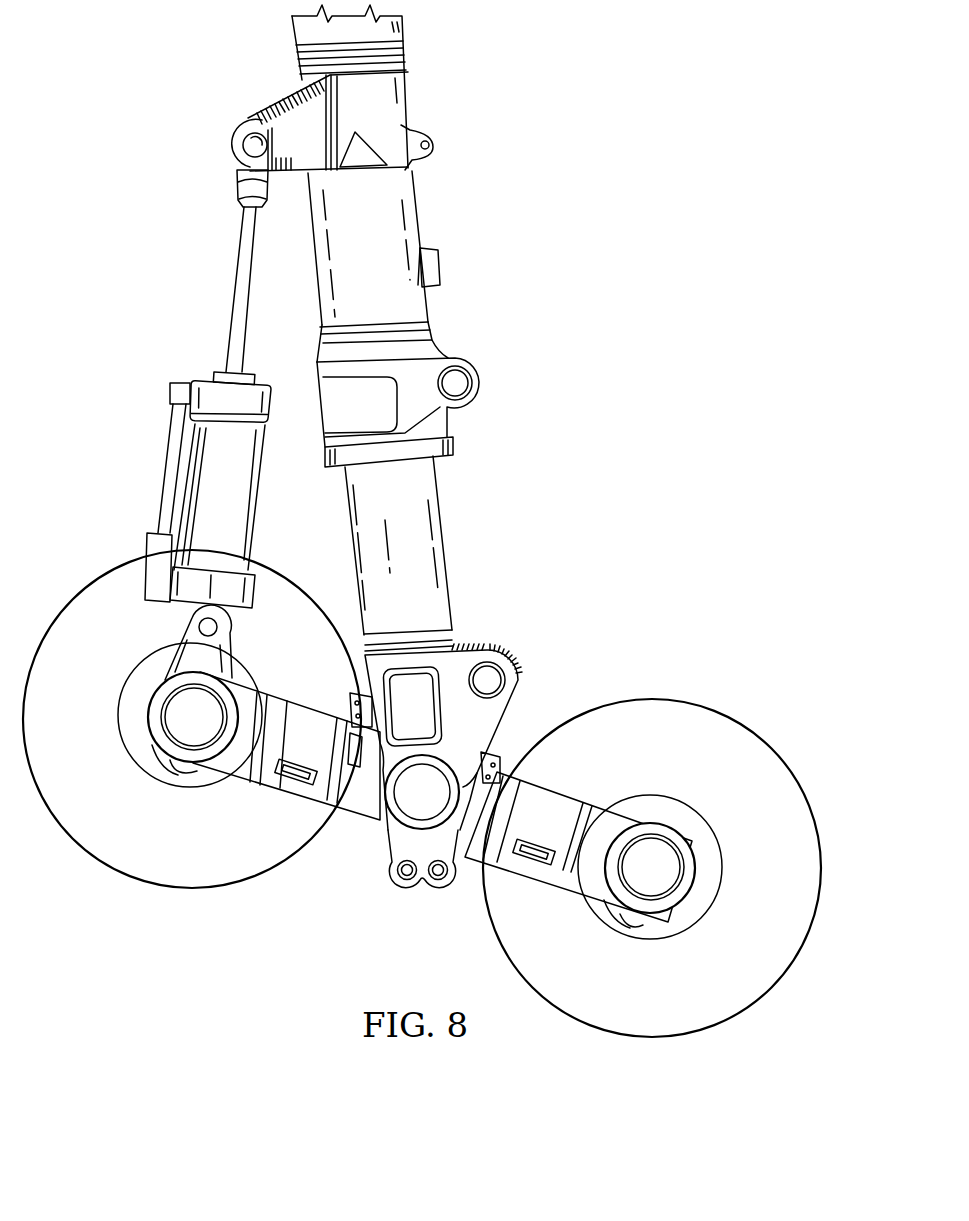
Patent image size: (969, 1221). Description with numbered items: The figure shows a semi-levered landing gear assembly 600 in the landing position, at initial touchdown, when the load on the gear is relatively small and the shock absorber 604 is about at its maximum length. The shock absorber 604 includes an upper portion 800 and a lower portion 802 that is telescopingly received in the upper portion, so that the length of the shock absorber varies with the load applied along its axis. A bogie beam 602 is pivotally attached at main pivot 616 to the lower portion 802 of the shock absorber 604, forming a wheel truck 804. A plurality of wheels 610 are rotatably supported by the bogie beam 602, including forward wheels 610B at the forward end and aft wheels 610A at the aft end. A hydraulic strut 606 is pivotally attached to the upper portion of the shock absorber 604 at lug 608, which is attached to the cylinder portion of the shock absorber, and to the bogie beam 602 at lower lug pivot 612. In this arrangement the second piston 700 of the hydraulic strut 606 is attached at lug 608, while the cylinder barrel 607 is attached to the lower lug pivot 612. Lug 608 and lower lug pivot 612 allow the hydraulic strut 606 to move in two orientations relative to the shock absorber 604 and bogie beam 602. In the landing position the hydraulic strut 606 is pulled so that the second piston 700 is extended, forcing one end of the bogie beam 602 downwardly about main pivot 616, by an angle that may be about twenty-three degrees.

The landing gear assembly 600 is at (523, 140).
The upper portion 800 is at (422, 193).
The lug 608 is at (246, 141).
The second piston 700 is at (230, 290).
The hydraulic strut 606 is at (253, 512).
The cylinder barrel 607 is at (235, 540).
The lower lug pivot 612 is at (207, 628).
The plurality of wheels 610 is at (138, 880).
The aft wheels 610A is at (676, 997).
The forward wheels 610B is at (219, 845).
The shock absorber 604 is at (415, 302).
The lower portion 802 is at (438, 593).
The wheel truck 804 is at (617, 778).
The bogie beam 602 is at (562, 798).
The main pivot 616 is at (441, 805).